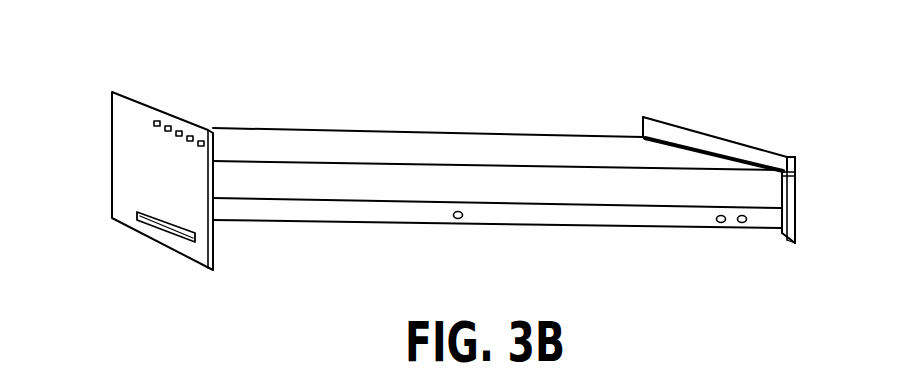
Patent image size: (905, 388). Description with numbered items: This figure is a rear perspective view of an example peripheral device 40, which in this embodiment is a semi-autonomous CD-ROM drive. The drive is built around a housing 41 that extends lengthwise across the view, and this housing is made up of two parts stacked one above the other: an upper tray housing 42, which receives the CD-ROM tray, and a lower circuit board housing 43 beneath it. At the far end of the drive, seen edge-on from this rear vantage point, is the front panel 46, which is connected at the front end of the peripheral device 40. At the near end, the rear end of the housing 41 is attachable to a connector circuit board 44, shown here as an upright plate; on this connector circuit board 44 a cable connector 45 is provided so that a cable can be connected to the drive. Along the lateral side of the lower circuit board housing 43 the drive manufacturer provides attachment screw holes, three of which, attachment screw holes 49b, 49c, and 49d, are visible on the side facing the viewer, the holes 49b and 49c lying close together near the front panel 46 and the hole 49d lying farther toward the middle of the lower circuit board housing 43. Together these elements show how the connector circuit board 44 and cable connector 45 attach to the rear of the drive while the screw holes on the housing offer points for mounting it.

The peripheral device 40 is at (428, 153).
The housing 41 is at (417, 164).
The upper tray housing 42 is at (283, 182).
The lower circuit board housing 43 is at (262, 215).
The connector circuit board 44 is at (143, 152).
The cable connector 45 is at (172, 232).
The front panel 46 is at (748, 152).
The attachment screw hole 49b is at (745, 224).
The attachment screw hole 49c is at (718, 225).
The attachment screw hole 49d is at (463, 222).